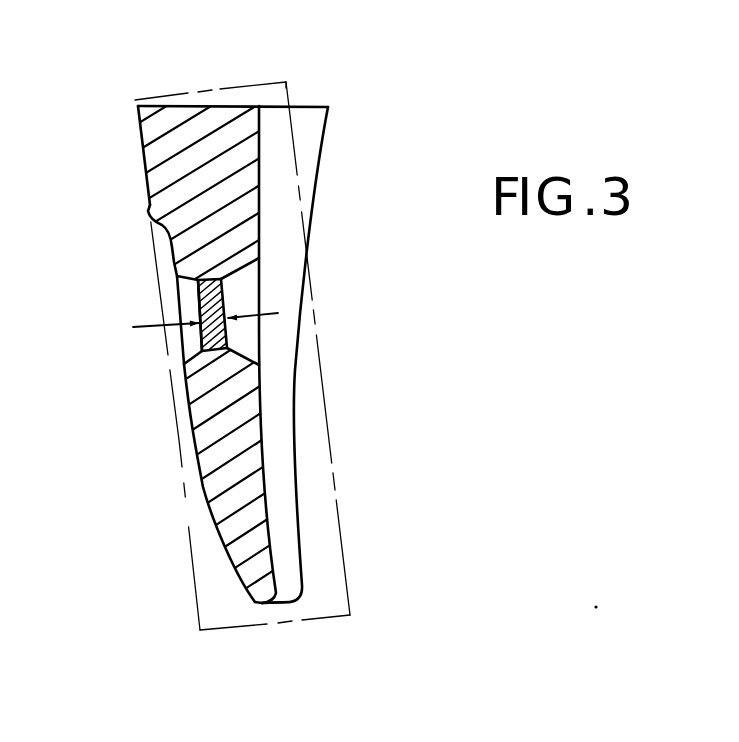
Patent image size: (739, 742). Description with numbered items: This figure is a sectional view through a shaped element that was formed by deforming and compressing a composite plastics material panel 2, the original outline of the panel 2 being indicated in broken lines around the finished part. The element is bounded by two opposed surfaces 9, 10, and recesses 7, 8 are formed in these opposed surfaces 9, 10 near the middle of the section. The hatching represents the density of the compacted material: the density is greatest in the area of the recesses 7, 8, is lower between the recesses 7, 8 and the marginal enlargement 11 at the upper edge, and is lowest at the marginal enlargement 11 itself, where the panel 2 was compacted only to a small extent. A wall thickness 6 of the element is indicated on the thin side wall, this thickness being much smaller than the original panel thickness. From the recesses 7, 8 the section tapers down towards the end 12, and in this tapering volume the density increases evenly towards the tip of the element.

The composite plastics material panel 2 is at (258, 82).
The marginal enlargement 11 is at (143, 160).
The surface 9 is at (263, 188).
The wall thickness 6 is at (147, 322).
The recess 7 is at (228, 338).
The recess 8 is at (200, 356).
The surface 10 is at (200, 502).
The end 12 is at (258, 603).